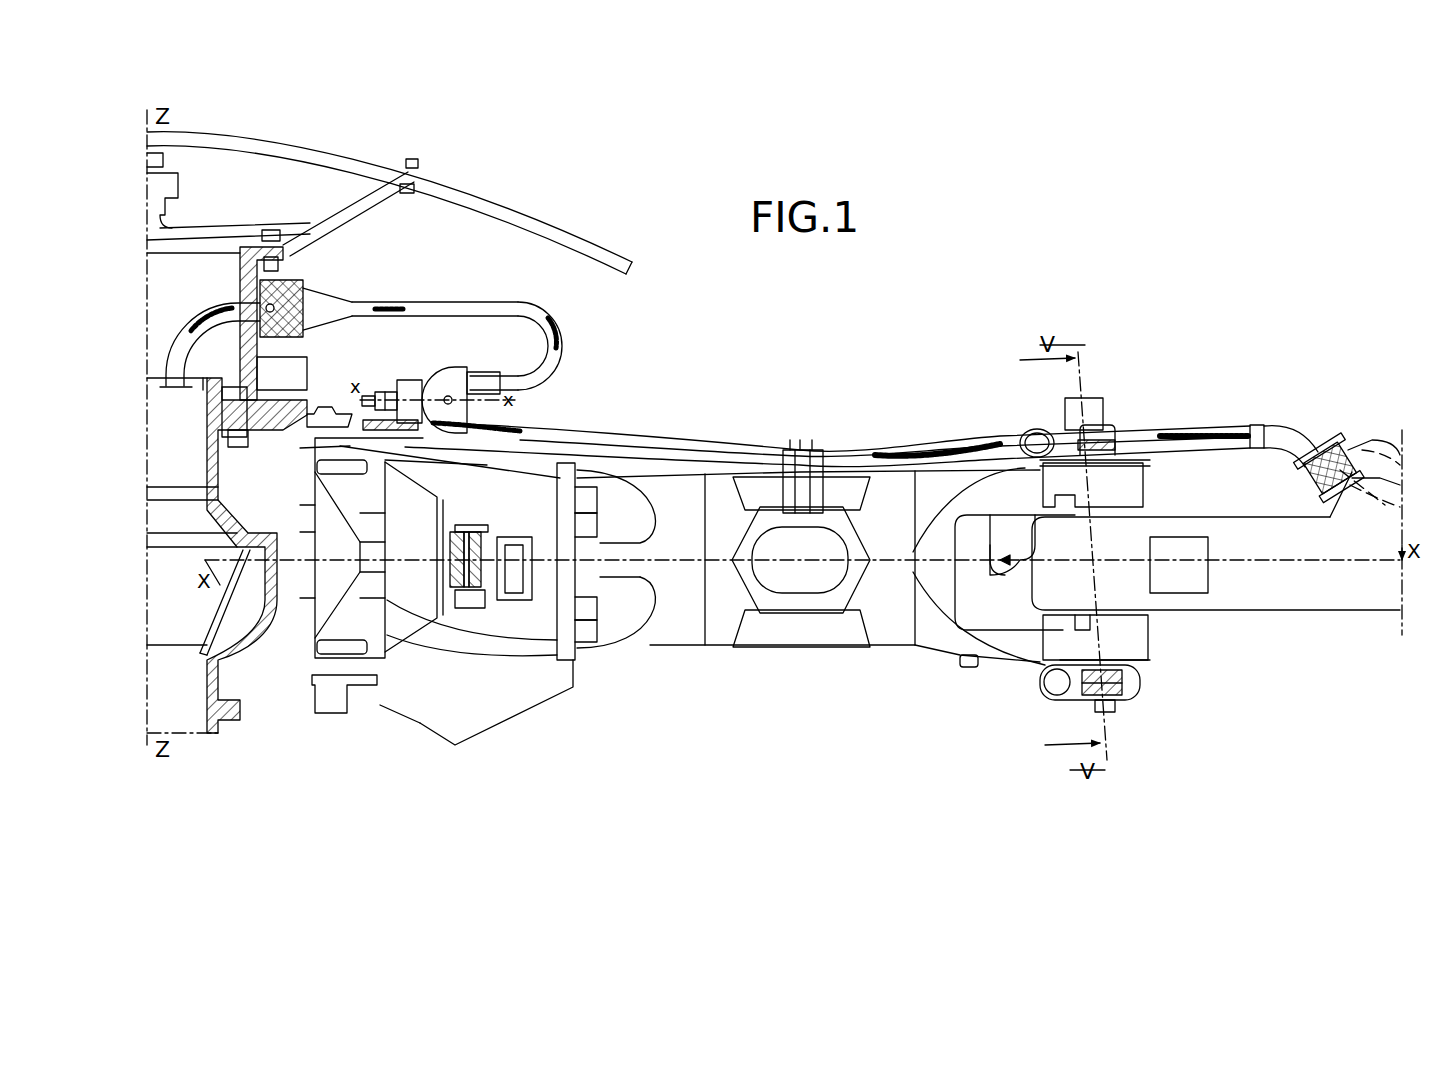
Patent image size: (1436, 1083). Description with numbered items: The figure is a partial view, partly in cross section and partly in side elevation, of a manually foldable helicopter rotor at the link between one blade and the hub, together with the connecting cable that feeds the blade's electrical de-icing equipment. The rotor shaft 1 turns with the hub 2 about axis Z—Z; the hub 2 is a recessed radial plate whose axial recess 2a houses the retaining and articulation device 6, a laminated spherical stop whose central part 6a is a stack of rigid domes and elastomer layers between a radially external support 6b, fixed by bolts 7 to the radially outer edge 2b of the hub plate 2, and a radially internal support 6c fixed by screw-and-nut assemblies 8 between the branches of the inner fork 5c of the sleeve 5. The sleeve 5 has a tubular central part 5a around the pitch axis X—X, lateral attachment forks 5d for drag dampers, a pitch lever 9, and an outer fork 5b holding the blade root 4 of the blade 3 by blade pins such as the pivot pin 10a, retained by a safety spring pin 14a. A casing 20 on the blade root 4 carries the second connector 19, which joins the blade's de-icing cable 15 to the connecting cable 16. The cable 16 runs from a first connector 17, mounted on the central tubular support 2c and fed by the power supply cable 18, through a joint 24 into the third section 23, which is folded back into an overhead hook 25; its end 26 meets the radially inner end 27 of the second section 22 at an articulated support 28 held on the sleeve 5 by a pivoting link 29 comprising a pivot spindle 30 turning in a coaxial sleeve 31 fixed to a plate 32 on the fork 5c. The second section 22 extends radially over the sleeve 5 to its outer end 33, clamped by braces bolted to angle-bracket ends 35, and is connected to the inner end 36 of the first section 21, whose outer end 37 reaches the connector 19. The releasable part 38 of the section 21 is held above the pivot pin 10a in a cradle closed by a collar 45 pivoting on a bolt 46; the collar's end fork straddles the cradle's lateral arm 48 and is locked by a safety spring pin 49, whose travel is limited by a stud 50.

The rotor shaft 1 is at (243, 745).
The hub 2 is at (236, 688).
The axial recess 2a is at (295, 605).
The radially outer edge of the hub plate 2b is at (500, 690).
The central tubular support 2c is at (238, 363).
The blade 3 is at (1290, 615).
The blade root 4 is at (1057, 590).
The sleeve 5 is at (680, 643).
The central part of the sleeve 5a is at (874, 648).
The outer fork of the sleeve 5b is at (1127, 480).
The inner fork of the sleeve 5c is at (348, 450).
The attachment forks 5d is at (830, 612).
The retaining and articulation device 6 is at (415, 635).
The central part of the stop 6a is at (400, 527).
The radially external support 6b is at (470, 530).
The radially internal support 6c is at (371, 567).
The bolts 7 is at (462, 600).
The assemblies with axial screws and nuts 8 is at (332, 407).
The pitch lever 9 is at (565, 652).
The blade pin 10a is at (1112, 682).
The safety spring pin 14a is at (1045, 698).
The de-icing cable 15 is at (1380, 440).
The electrical connecting cable 16 is at (677, 442).
The first connector 17 is at (300, 290).
The electrical power supply cable 18 is at (187, 343).
The second connector 19 is at (1332, 455).
The casing 20 is at (1368, 440).
The first section of cable 21 is at (1153, 425).
The second section of cable 22 is at (621, 437).
The third section of cable 23 is at (410, 300).
The joint of varying cross section 24 is at (325, 310).
The overhead hook 25 is at (560, 328).
The end of the third section 26 is at (487, 374).
The radially inner end of the second section 27 is at (488, 430).
The articulated support 28 is at (458, 370).
The pivoting link 29 is at (390, 392).
The pivot spindle 30 is at (370, 396).
The coaxial sleeve 31 is at (412, 382).
The plate 32 is at (352, 428).
The radially outer end of the second section 33 is at (847, 455).
The fixing angle-bracket ends 35 is at (788, 458).
The inner end of the first section 36 is at (898, 450).
The outer end of the first section 37 is at (1290, 440).
The releasable part 38 is at (1100, 440).
The collar 45 is at (1092, 407).
The bolt 46 is at (1045, 468).
The lateral arm of the cradle 48 is at (1125, 467).
The safety spring pin 49 is at (1022, 432).
The stud 50 is at (1075, 432).